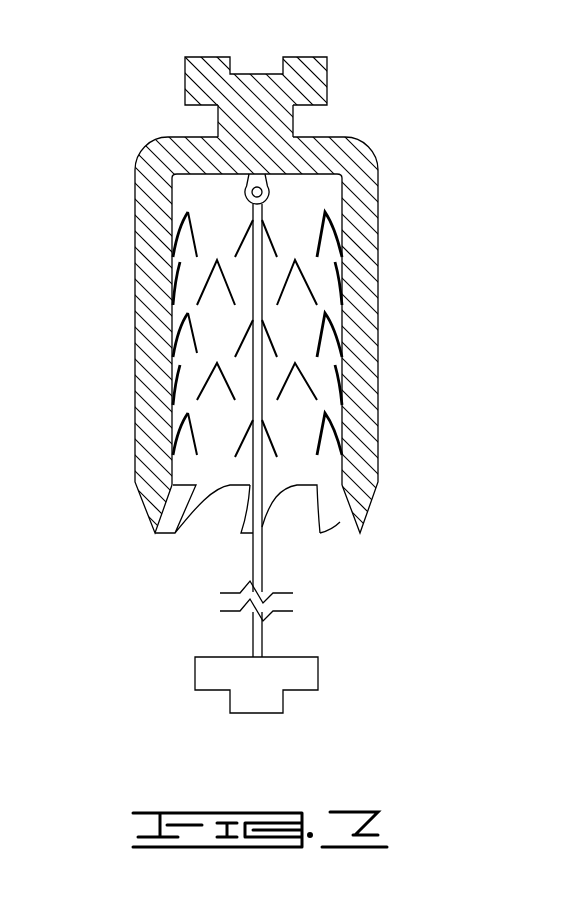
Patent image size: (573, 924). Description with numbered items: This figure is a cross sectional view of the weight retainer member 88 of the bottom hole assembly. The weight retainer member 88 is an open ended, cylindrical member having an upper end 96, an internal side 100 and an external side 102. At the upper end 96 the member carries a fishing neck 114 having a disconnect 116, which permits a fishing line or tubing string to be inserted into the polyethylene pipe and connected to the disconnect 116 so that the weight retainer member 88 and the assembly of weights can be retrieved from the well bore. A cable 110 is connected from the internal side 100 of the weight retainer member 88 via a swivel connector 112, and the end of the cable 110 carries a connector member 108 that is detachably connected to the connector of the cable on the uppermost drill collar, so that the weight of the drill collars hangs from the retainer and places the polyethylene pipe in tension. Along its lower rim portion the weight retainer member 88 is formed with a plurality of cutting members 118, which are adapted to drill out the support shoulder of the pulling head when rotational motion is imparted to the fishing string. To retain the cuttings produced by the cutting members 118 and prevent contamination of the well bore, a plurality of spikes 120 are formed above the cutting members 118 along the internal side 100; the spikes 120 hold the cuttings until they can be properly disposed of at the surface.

The weight retainer member 88 is at (129, 170).
The disconnect 116 is at (328, 73).
The fishing neck 114 is at (218, 123).
The upper end 96 is at (338, 138).
The external side 102 is at (378, 233).
The internal side 100 is at (172, 206).
The swivel connector 112 is at (270, 192).
The cable 110 is at (252, 562).
The connector member 108 is at (318, 675).
The cutting members 118 is at (153, 530).
The spikes 120 is at (203, 380).